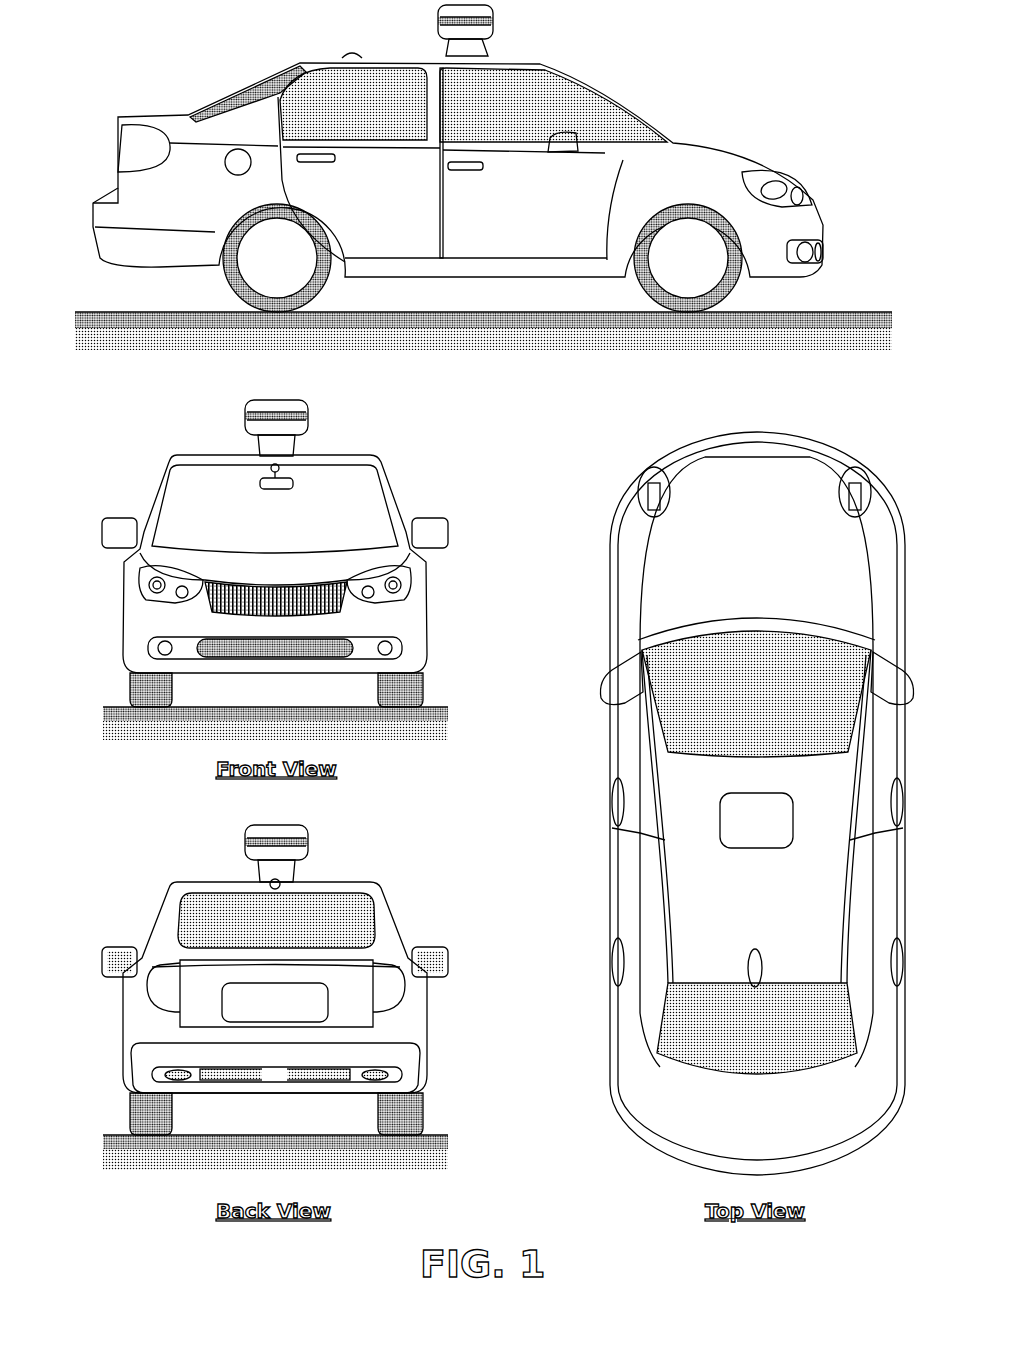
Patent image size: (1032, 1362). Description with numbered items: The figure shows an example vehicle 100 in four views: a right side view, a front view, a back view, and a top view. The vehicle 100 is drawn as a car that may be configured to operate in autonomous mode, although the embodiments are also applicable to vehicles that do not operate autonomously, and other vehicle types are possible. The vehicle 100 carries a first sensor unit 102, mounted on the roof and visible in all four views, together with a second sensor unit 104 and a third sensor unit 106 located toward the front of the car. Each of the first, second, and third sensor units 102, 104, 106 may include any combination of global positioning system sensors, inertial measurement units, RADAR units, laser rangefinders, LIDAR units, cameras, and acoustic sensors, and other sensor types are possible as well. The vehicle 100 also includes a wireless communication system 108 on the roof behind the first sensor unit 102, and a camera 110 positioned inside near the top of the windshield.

The vehicle 100 is at (90, 104).
The first sensor unit 102 is at (493, 31).
The second sensor unit 104 is at (823, 250).
The third sensor unit 106 is at (810, 195).
The wireless communication system 108 is at (350, 53).
The camera 110 is at (278, 469).